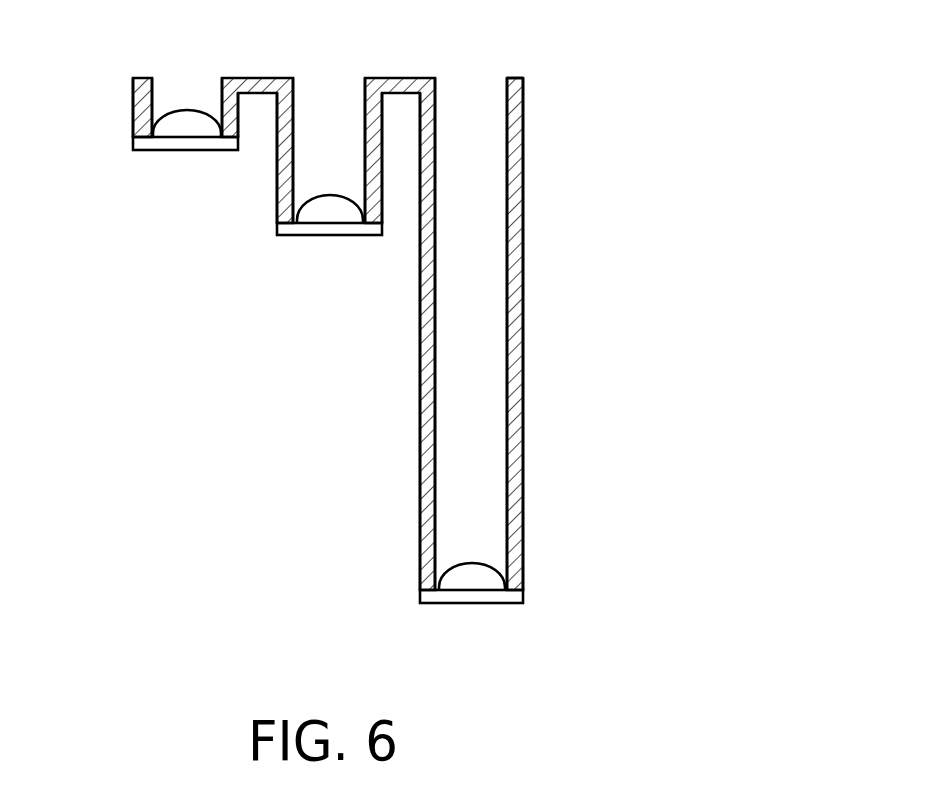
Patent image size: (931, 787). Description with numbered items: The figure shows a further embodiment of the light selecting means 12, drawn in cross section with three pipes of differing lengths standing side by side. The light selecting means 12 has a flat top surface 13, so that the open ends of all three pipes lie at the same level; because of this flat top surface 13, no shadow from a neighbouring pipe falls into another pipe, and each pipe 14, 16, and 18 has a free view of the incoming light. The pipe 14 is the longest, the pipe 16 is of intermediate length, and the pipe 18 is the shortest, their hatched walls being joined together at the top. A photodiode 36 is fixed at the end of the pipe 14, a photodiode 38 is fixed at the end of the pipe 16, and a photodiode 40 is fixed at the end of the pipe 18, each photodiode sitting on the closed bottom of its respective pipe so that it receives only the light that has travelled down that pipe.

The light selecting means 12 is at (162, 562).
The flat top surface 13 is at (515, 66).
The pipe 14 is at (523, 340).
The pipe 16 is at (277, 213).
The pipe 18 is at (133, 113).
The photodiode 36 is at (470, 603).
The photodiode 38 is at (328, 235).
The photodiode 40 is at (186, 150).